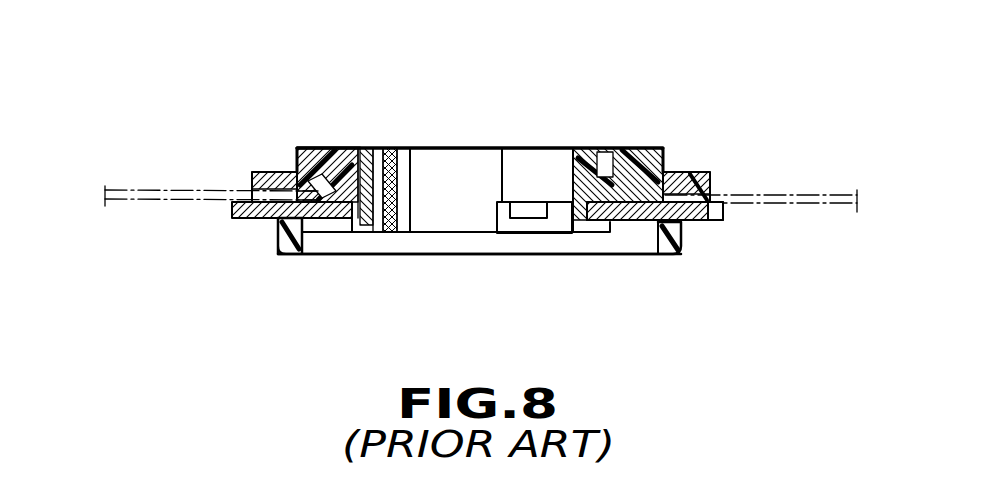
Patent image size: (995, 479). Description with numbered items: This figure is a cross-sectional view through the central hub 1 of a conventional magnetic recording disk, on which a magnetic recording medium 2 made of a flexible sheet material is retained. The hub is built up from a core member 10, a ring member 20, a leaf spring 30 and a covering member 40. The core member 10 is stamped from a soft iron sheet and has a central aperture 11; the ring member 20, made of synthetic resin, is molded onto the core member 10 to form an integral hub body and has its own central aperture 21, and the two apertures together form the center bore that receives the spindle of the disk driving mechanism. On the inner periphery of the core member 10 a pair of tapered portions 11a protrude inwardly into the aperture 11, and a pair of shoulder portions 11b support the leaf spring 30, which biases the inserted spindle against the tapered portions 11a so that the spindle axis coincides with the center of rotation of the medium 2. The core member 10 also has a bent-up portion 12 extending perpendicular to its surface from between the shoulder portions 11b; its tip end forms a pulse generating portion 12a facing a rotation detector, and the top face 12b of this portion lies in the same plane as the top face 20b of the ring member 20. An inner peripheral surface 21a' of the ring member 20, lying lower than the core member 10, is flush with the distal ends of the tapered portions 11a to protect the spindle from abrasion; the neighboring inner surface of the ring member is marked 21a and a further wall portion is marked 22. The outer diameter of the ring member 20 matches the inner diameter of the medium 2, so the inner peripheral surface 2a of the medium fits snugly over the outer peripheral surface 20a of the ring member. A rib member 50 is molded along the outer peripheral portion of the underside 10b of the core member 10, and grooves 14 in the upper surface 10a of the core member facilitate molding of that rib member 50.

The central hub 1 is at (476, 256).
The magnetic recording medium 2 is at (167, 190).
The inner peripheral surface 2a is at (322, 220).
The core member 10 is at (242, 220).
The upper surface 10a is at (723, 200).
The underside 10b is at (687, 222).
The central aperture 11 is at (603, 232).
The tapered portion 11a is at (522, 212).
The shoulder portion 11b is at (404, 220).
The bent-up portion 12 is at (355, 222).
The pulse generating portion 12a is at (302, 147).
The top face 12b is at (358, 160).
The groove 14 is at (252, 173).
The ring member 20 is at (588, 147).
The outer peripheral surface 20a is at (658, 148).
The top face 20b is at (345, 147).
The central aperture 21 is at (472, 162).
The ferrule flange 21a is at (556, 127).
The inner peripheral surface 21a' is at (557, 253).
The sleeve 22 is at (381, 160).
The leaf spring 30 is at (414, 165).
The covering member 40 is at (317, 147).
The rib member 50 is at (283, 250).